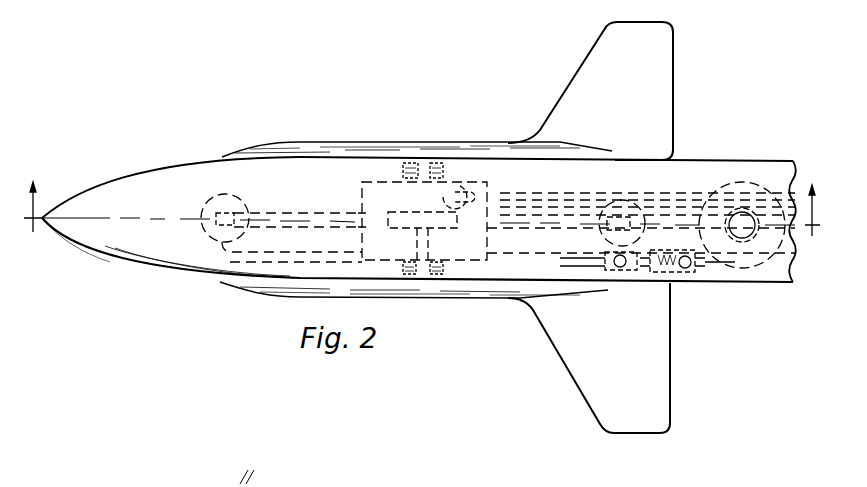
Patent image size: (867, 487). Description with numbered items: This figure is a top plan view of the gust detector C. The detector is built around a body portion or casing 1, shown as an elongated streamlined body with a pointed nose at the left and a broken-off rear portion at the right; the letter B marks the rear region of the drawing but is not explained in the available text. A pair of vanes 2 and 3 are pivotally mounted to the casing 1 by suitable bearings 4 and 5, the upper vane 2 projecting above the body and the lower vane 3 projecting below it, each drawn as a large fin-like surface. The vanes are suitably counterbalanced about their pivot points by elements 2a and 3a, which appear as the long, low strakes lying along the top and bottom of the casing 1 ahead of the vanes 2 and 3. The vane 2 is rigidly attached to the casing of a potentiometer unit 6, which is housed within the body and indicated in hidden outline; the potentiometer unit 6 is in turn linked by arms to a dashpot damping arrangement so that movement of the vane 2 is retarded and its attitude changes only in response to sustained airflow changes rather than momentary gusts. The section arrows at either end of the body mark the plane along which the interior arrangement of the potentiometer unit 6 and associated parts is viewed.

The body portion or casing 1 is at (137, 179).
The vane 2 is at (582, 79).
The counterbalance element 2a is at (283, 152).
The vane 3 is at (580, 374).
The counterbalance element 3a is at (232, 297).
The bearing 4 is at (445, 172).
The bearing 5 is at (445, 243).
The potentiometer unit 6 is at (422, 196).
The rear body section B is at (757, 170).
The gust detector C is at (110, 245).